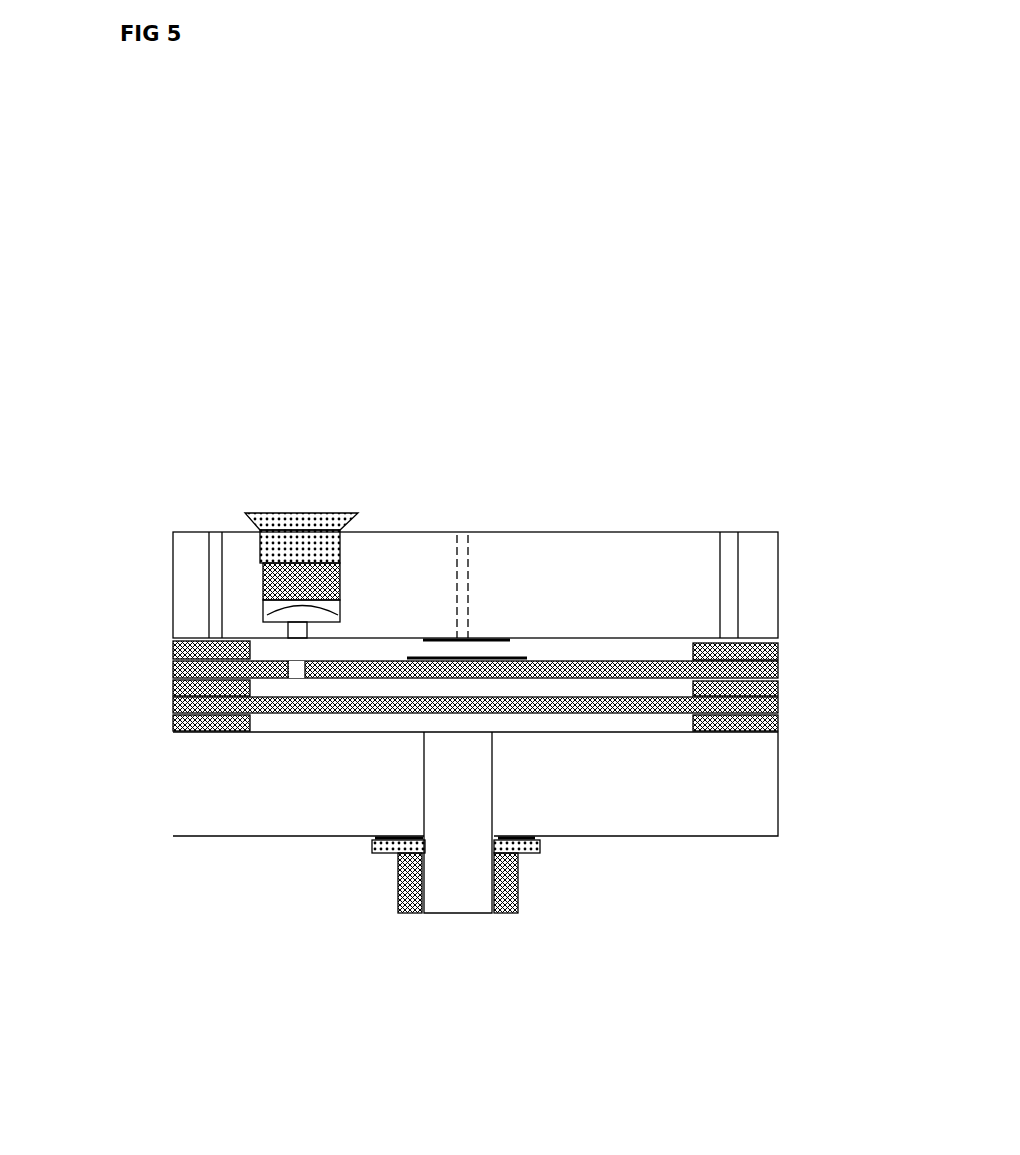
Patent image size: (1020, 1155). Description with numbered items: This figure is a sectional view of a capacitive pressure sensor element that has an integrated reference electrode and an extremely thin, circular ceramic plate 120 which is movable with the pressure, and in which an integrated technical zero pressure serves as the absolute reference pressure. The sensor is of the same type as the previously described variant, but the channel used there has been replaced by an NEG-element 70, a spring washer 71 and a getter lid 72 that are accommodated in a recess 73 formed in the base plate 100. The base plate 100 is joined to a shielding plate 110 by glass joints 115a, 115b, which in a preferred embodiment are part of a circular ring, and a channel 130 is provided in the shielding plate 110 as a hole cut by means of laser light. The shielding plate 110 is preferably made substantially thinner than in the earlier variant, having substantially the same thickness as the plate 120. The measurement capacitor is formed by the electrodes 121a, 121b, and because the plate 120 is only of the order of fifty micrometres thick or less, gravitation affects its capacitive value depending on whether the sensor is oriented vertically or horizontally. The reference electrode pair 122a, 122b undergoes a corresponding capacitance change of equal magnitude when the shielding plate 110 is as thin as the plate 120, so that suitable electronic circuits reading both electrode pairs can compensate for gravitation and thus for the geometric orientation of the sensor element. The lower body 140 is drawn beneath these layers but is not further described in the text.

The NEG-element 70 is at (326, 501).
The spring washer 71 is at (300, 565).
The getter lid 72 is at (327, 538).
The recess 73 is at (342, 562).
The base plate 100 is at (565, 575).
The shielding plate 110 is at (668, 660).
The glass joint 115a is at (203, 645).
The glass joint 115b is at (763, 655).
The plate movable with the pressure 120 is at (680, 713).
The measurement electrode 121a is at (503, 680).
The measurement electrode 121b is at (487, 680).
The reference electrode 122a is at (423, 641).
The reference electrode 122b is at (443, 680).
The channel 130 is at (295, 672).
The lower body 140 is at (640, 817).